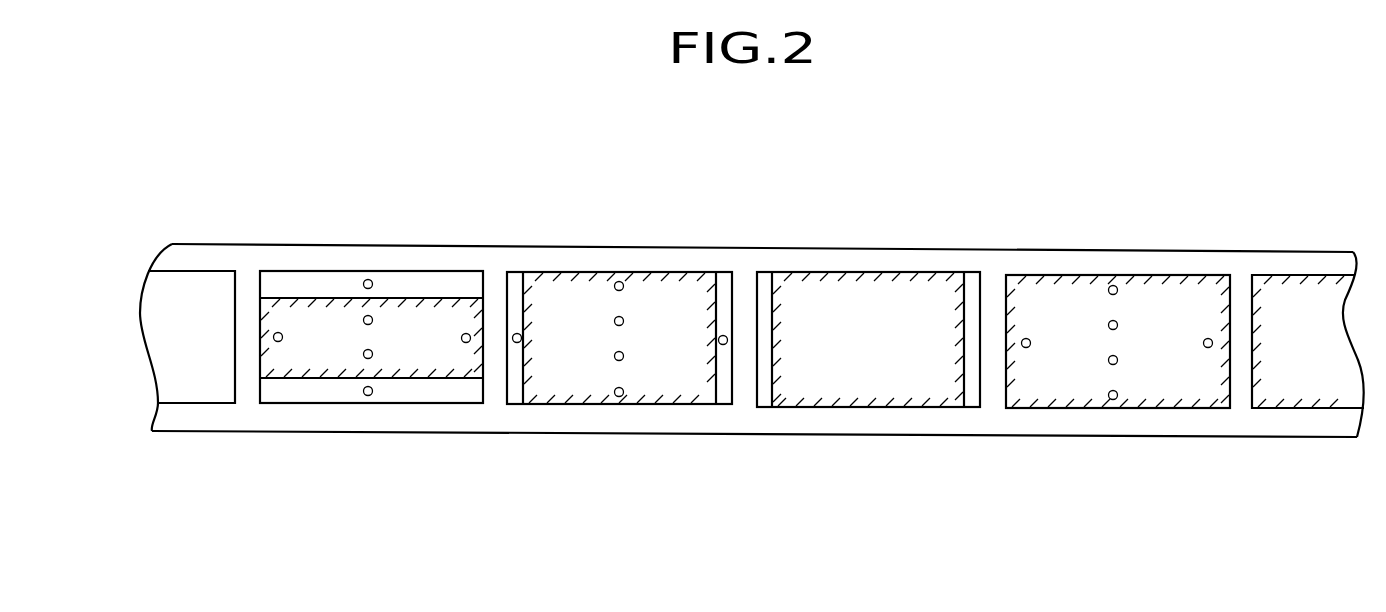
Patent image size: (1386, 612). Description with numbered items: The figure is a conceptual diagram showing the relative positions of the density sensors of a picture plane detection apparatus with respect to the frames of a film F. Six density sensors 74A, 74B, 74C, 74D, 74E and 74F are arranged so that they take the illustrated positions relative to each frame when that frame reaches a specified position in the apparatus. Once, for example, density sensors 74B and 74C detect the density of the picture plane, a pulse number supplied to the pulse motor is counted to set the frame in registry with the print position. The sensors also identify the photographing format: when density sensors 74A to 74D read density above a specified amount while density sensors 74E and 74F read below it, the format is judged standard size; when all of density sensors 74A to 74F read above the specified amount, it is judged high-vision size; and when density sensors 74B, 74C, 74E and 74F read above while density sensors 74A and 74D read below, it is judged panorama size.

The film F is at (887, 437).
The density sensor 74A is at (372, 282).
The density sensor 74B is at (364, 319).
The density sensor 74C is at (364, 354).
The density sensor 74D is at (372, 391).
The density sensor 74E is at (282, 333).
The density sensor 74F is at (466, 334).